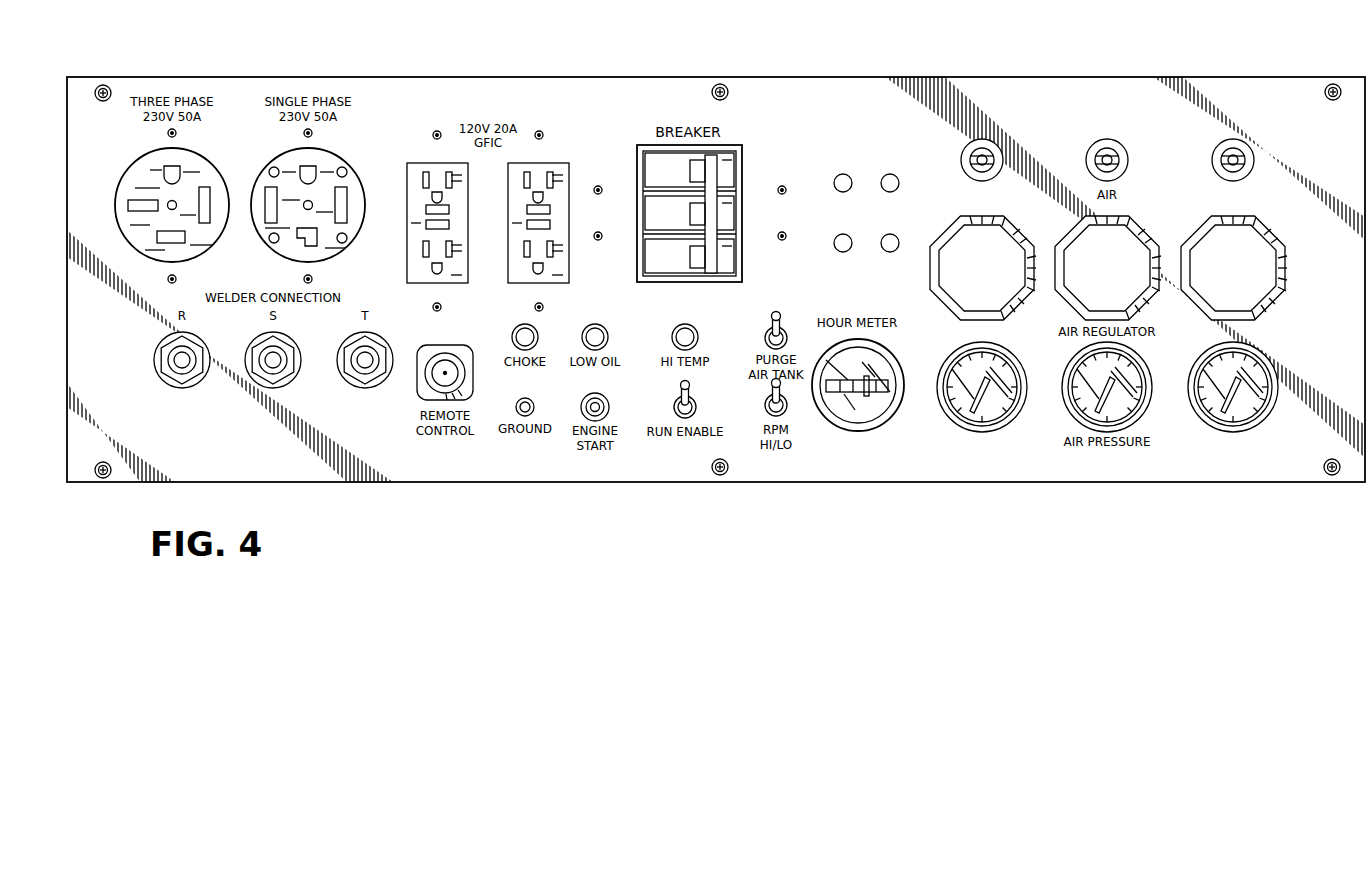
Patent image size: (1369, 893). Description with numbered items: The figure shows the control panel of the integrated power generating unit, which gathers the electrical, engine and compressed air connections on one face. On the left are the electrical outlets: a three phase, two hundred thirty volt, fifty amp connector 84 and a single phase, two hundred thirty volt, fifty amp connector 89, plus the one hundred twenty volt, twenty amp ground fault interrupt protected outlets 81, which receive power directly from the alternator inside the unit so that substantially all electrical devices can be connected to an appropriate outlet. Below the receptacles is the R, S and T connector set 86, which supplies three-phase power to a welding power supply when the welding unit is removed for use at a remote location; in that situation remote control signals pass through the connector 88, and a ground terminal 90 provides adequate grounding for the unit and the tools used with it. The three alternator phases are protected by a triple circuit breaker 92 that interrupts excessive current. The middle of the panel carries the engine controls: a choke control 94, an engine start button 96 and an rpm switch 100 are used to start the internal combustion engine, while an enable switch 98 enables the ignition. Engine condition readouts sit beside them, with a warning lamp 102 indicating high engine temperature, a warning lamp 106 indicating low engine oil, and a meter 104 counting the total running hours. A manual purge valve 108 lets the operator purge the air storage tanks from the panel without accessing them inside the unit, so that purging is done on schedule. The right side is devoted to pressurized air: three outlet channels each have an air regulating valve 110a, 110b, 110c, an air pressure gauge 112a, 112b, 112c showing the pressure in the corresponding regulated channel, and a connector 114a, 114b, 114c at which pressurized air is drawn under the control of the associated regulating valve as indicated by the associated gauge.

The ground fault interrupt protected outlets 81 is at (407, 195).
The three phase connector 84 is at (212, 160).
The R, S and T connector set 86 is at (182, 390).
The connector 88 is at (447, 345).
The single phase connector 89 is at (345, 158).
The ground terminal 90 is at (533, 403).
The triple circuit breaker 92 is at (742, 157).
The choke control 94 is at (537, 330).
The engine start button 96 is at (610, 405).
The enable switch 98 is at (694, 402).
The rpm switch 100 is at (786, 404).
The warning lamp 102 is at (692, 326).
The meter 104 is at (880, 421).
The warning lamp 106 is at (600, 325).
The manual purge valve 108 is at (778, 313).
The air regulating valve 110a is at (995, 216).
The air regulating valve 110b is at (1120, 216).
The air regulating valve 110c is at (1246, 216).
The air pressure gauge 112a is at (975, 430).
The air pressure gauge 112b is at (1145, 410).
The air pressure gauge 112c is at (1255, 425).
The pressurized air connector 114a is at (982, 138).
The pressurized air connector 114b is at (1107, 138).
The pressurized air connector 114c is at (1233, 138).